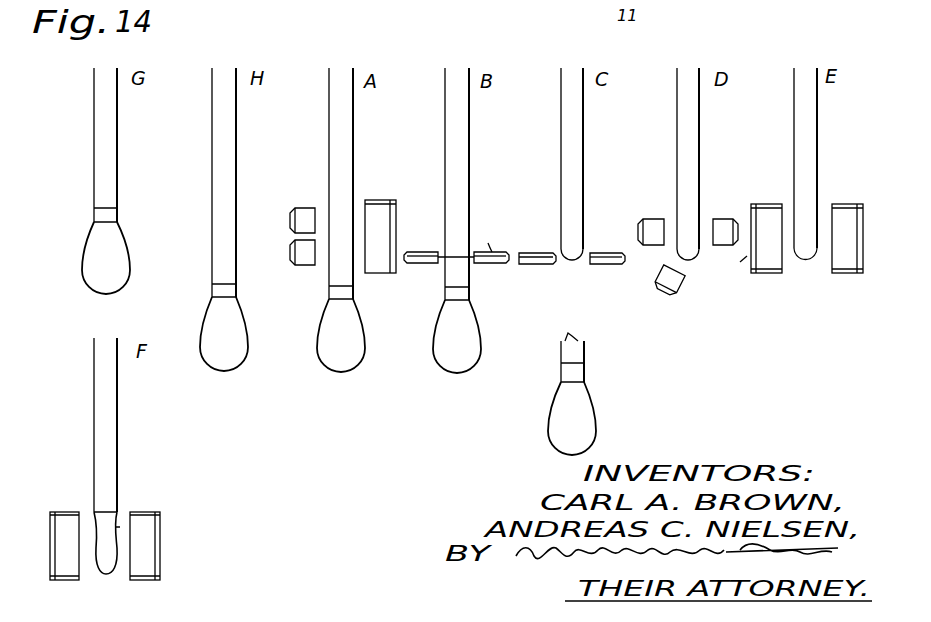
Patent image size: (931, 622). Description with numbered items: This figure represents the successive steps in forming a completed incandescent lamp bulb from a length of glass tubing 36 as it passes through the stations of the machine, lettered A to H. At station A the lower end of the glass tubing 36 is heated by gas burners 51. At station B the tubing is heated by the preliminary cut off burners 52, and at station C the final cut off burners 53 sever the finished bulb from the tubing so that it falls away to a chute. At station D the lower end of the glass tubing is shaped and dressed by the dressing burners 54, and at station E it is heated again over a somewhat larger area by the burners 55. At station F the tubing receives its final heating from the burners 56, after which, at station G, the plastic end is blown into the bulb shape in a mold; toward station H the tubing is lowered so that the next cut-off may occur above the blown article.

The glass tubing 36 is at (112, 413).
The gas burners 51 is at (291, 246).
The preliminary cut off burners 52 is at (428, 252).
The final cut off burners 53 is at (573, 282).
The dressing burners 54 is at (648, 219).
The burners 55 is at (762, 273).
The burners 56 is at (145, 512).